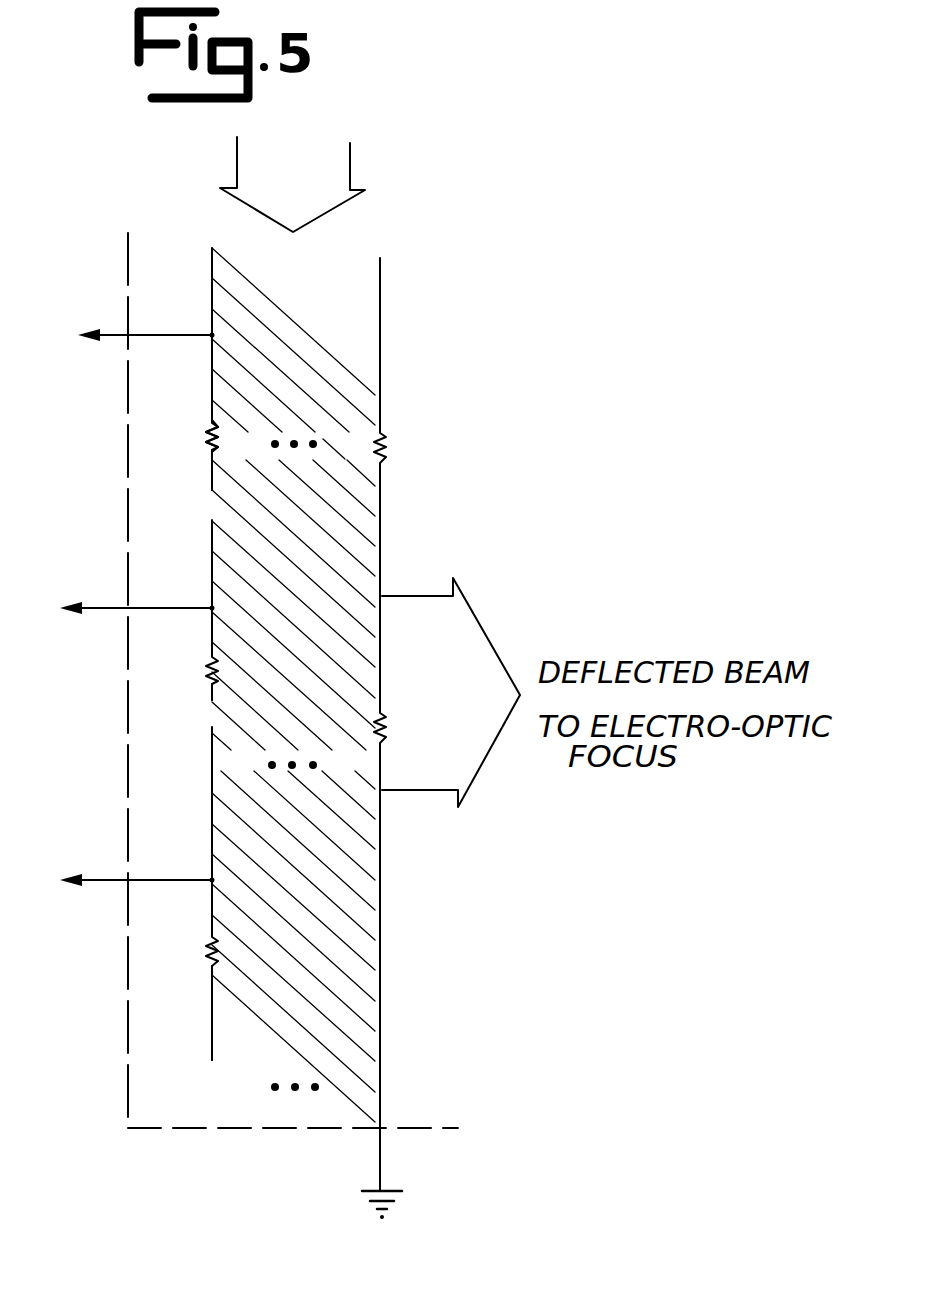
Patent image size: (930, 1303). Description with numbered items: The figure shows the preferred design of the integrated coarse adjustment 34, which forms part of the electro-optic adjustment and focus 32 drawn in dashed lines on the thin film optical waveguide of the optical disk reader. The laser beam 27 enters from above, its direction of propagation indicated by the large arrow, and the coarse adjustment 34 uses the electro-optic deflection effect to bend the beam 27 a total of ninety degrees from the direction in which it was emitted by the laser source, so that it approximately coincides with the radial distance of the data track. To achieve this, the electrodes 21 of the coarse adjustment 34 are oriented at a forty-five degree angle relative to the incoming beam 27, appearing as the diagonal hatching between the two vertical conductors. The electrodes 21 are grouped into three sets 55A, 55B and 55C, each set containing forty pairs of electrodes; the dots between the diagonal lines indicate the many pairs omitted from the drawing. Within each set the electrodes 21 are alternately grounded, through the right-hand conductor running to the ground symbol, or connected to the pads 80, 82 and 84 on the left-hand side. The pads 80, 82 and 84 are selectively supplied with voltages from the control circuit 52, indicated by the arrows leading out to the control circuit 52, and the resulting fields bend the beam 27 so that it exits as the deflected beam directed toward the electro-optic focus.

The electrodes 21 is at (318, 345).
The beam 27 is at (335, 168).
The electro-optic adjustment and focus 32 is at (148, 1083).
The integrated coarse adjustment 34 is at (200, 462).
The control circuit 52 is at (98, 882).
The set of electrodes 55A is at (200, 296).
The set of electrodes 55B is at (200, 557).
The set of electrodes 55C is at (200, 782).
The pad 80 is at (211, 475).
The pad 82 is at (211, 692).
The pad 84 is at (211, 982).